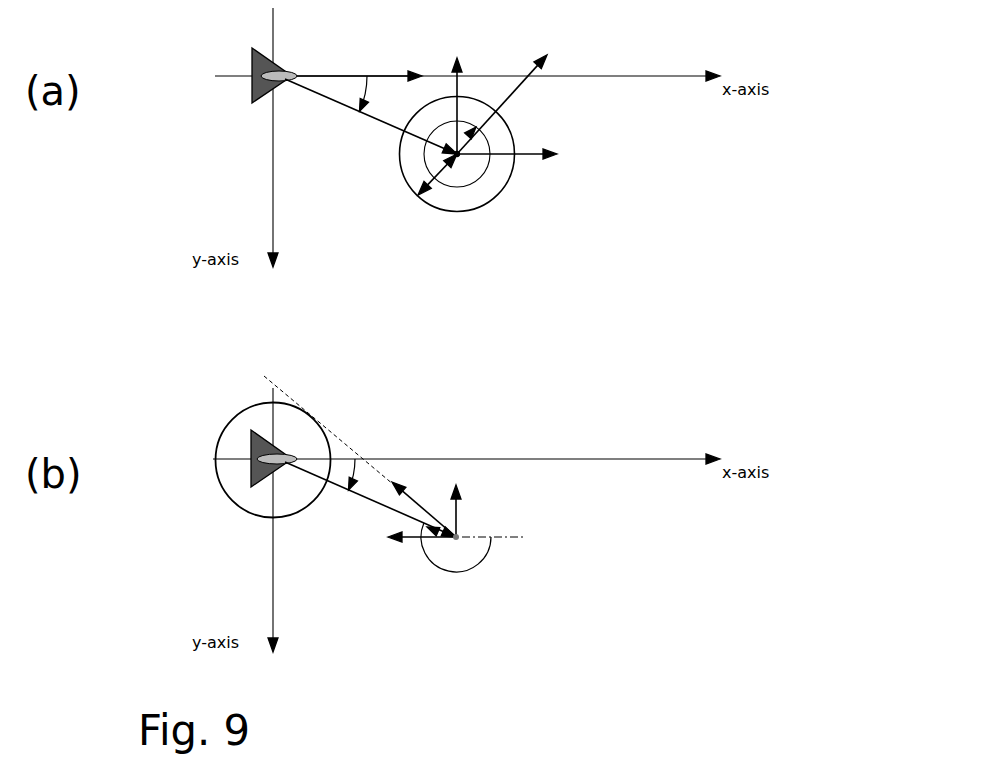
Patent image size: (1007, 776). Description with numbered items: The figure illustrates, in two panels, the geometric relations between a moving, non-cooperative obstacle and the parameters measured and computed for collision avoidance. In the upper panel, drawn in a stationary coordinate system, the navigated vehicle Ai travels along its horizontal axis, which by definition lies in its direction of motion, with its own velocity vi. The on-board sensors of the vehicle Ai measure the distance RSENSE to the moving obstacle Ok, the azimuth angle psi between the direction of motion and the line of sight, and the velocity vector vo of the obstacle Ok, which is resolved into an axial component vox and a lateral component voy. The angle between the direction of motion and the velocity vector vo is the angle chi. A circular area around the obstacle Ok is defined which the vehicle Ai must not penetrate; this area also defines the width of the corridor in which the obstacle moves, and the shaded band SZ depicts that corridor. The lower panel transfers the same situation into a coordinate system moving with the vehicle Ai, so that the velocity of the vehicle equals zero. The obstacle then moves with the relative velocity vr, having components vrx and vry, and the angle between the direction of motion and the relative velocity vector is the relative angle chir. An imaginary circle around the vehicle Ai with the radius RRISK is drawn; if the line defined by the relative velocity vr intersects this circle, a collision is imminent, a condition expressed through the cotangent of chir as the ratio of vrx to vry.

The navigated vehicle Ai is at (262, 75).
The moving obstacle Ok is at (457, 154).
The safety zone SZ is at (500, 203).
The distance RSENSE is at (371, 116).
The radius RRISK is at (417, 174).
The own velocity vi is at (359, 66).
The velocity vector vo is at (510, 99).
The axial component vox is at (518, 165).
The lateral component voy is at (466, 96).
The relative velocity vr is at (424, 503).
The relative velocity x component vrx is at (421, 548).
The relative velocity y component vry is at (466, 507).
The azimuth angle psi is at (370, 93).
The angle chi is at (472, 163).
The relative angle chir is at (473, 556).